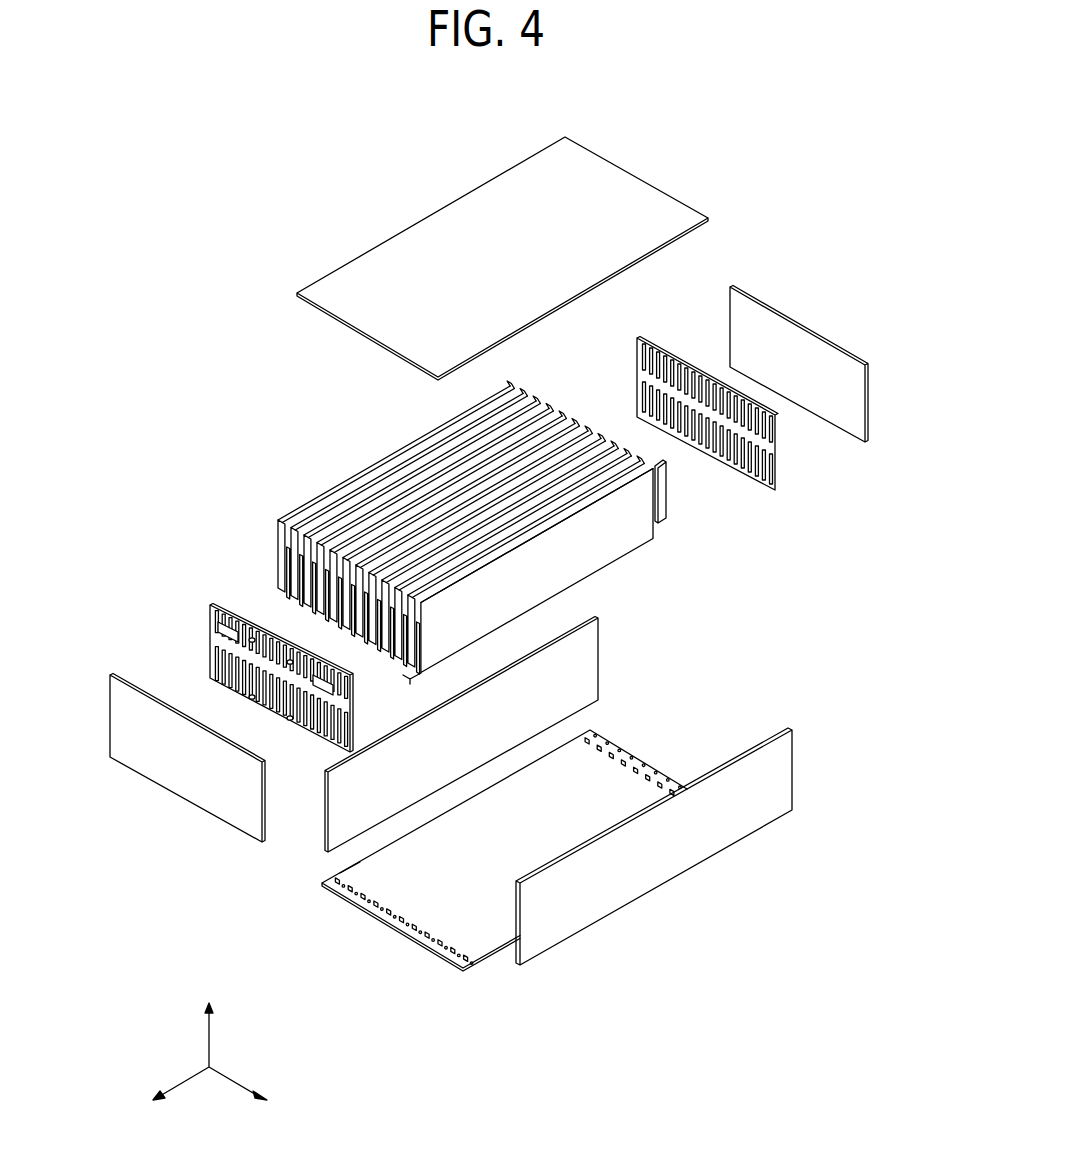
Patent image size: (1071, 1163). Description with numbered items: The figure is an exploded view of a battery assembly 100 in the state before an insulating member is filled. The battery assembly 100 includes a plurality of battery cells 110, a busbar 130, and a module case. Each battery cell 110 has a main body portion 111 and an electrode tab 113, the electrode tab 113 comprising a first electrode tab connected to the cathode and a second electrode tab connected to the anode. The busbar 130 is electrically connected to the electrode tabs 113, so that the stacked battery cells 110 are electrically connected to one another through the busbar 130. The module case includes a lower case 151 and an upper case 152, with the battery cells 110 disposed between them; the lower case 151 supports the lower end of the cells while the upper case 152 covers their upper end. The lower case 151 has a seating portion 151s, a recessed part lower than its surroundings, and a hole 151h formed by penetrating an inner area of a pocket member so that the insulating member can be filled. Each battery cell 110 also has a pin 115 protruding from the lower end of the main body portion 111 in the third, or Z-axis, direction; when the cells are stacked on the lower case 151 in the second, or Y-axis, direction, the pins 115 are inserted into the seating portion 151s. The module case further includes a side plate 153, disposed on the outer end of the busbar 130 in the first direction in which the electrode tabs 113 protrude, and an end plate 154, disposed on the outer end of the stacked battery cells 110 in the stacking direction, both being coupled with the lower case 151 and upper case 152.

The battery assembly 100 is at (182, 149).
The battery cell 110 is at (355, 465).
The main body portion 111 is at (622, 558).
The electrode tab 113 is at (668, 500).
The pin 115 is at (405, 676).
The busbar 130 is at (780, 450).
The lower case 151 is at (410, 948).
The seating portion 151s is at (338, 878).
The hole 151h is at (338, 898).
The upper case 152 is at (342, 325).
The side plate 153 is at (875, 392).
The end plate 154 is at (603, 648).